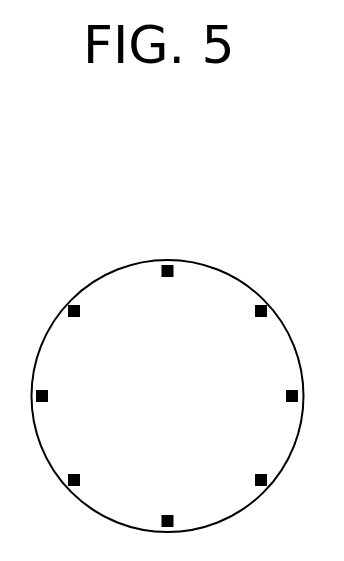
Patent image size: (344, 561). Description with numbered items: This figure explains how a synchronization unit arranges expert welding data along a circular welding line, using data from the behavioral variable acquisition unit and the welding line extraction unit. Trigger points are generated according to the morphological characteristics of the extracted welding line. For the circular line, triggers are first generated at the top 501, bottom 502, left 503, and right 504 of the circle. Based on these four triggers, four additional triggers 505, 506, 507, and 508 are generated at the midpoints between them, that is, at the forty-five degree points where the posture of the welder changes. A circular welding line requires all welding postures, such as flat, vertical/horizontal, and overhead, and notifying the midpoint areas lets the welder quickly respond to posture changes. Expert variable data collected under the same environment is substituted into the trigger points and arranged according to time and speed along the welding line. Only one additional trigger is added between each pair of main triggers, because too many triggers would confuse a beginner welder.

The top trigger 501 is at (168, 278).
The bottom trigger 502 is at (168, 514).
The left trigger 503 is at (49, 396).
The right trigger 504 is at (285, 396).
The additional trigger 505 is at (80, 317).
The additional trigger 506 is at (80, 475).
The additional trigger 507 is at (255, 317).
The additional trigger 508 is at (255, 475).